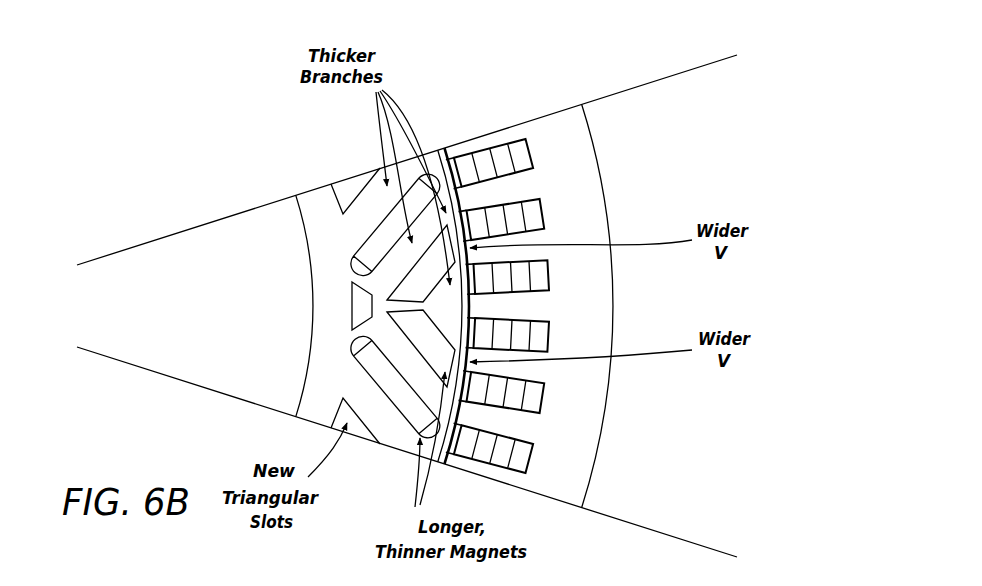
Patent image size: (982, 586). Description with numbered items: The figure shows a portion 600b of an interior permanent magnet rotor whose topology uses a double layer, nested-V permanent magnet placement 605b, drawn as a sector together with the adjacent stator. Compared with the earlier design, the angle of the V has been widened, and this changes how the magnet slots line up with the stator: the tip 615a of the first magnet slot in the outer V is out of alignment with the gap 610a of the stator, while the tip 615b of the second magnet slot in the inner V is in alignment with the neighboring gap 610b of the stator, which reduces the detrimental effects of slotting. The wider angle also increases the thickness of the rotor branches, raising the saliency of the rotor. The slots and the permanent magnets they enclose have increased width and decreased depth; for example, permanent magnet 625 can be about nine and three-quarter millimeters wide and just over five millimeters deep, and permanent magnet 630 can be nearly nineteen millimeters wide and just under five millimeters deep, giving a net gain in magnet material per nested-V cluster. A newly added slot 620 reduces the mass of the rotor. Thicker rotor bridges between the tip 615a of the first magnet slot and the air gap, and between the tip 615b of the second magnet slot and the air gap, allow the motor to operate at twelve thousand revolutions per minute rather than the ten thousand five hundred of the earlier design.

The portion of IPM rotor 600b is at (246, 116).
The double layer nested-V permanent magnet placement 605b is at (390, 431).
The gap of the stator 610a is at (468, 168).
The neighboring gap of the stator 610b is at (468, 225).
The tip of first magnet slot 615a is at (449, 167).
The tip of second magnet slot 615b is at (508, 168).
The slot 620 is at (347, 190).
The permanent magnet 625 is at (470, 313).
The permanent magnet 630 is at (470, 404).